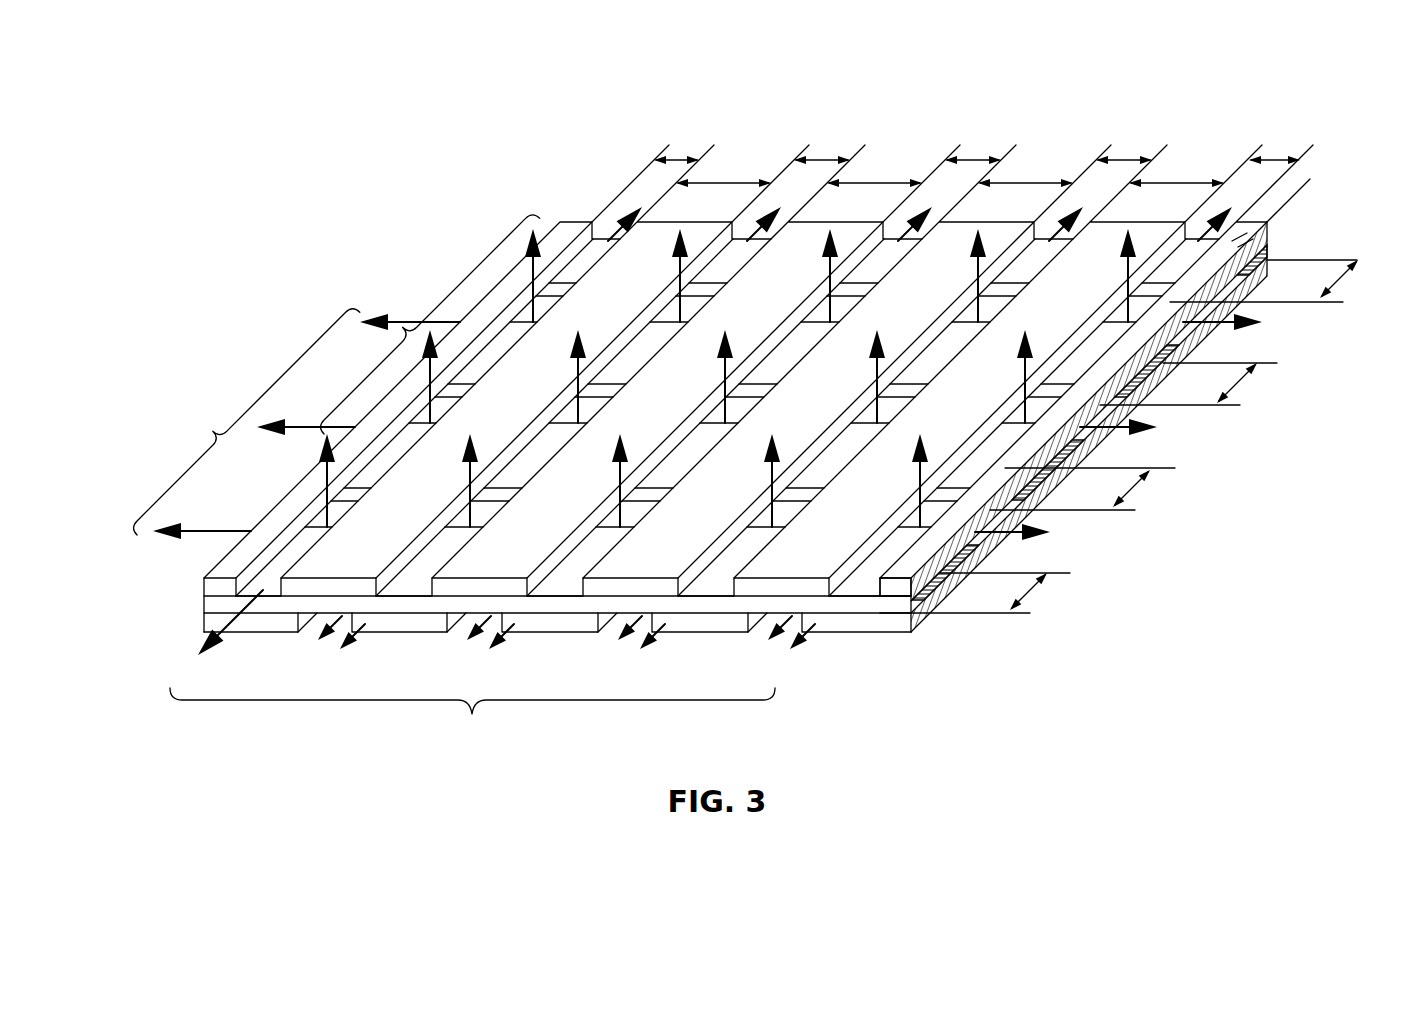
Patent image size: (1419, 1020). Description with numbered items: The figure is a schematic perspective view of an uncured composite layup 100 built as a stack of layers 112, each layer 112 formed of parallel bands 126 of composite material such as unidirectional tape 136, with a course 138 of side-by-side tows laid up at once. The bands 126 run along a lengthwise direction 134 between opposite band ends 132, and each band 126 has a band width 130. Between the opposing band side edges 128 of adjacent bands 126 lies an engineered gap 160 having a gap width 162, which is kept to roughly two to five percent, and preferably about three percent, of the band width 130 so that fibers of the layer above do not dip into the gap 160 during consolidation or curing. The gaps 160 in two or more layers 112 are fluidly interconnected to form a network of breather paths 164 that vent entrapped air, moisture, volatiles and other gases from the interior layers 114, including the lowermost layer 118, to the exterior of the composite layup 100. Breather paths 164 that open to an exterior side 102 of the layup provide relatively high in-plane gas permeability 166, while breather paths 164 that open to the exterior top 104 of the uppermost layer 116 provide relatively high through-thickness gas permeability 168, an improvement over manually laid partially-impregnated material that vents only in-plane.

The composite layup 100 is at (300, 156).
The exterior side 102 is at (1284, 240).
The exterior top 104 is at (1276, 213).
The layer 112 is at (929, 617).
The interior layer 114 is at (885, 608).
The uppermost layer 116 is at (890, 590).
The lowermost layer 118 is at (902, 623).
The band 126 is at (263, 602).
The band side edge 128 is at (403, 600).
The band width 130 is at (730, 183).
The band end 132 is at (574, 221).
The lengthwise direction 134 is at (1097, 385).
The unidirectional tape 136 is at (204, 612).
The course 138 is at (204, 630).
The gap 160 is at (743, 218).
The gap width 162 is at (677, 160).
The breather path 164 is at (378, 320).
The in-plane gas permeability 166 is at (449, 526).
The through-thickness gas permeability 168 is at (425, 319).